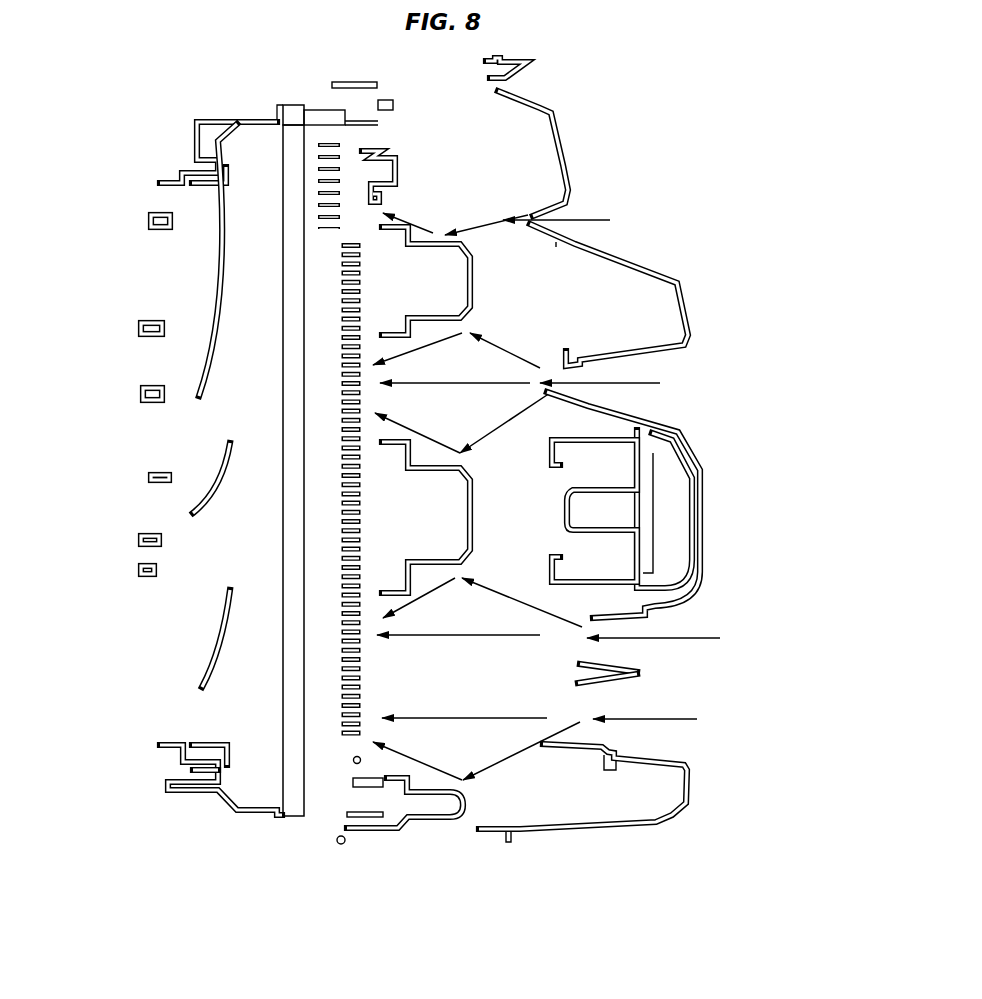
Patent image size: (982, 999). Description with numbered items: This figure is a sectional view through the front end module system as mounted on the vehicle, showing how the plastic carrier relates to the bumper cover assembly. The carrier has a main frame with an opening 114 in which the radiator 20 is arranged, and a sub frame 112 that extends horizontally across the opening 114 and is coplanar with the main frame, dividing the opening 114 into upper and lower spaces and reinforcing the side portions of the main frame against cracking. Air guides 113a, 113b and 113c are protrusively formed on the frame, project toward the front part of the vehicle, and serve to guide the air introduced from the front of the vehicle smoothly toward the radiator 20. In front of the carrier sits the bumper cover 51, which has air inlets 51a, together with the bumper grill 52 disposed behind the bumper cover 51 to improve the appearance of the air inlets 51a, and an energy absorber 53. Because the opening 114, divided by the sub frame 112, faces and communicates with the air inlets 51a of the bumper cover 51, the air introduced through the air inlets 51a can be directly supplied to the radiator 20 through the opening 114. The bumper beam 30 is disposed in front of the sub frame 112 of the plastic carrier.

The radiator 20 is at (343, 598).
The sub frame 112 is at (388, 458).
The air guide 113a is at (473, 275).
The air guide 113b is at (467, 512).
The air guide 113c is at (442, 817).
The opening 114 is at (384, 661).
The bumper cover 51 is at (693, 517).
The air inlets 51a is at (615, 362).
The bumper grill 52 is at (640, 667).
The energy absorber 53 is at (670, 478).
The bumper beam 30 is at (633, 557).